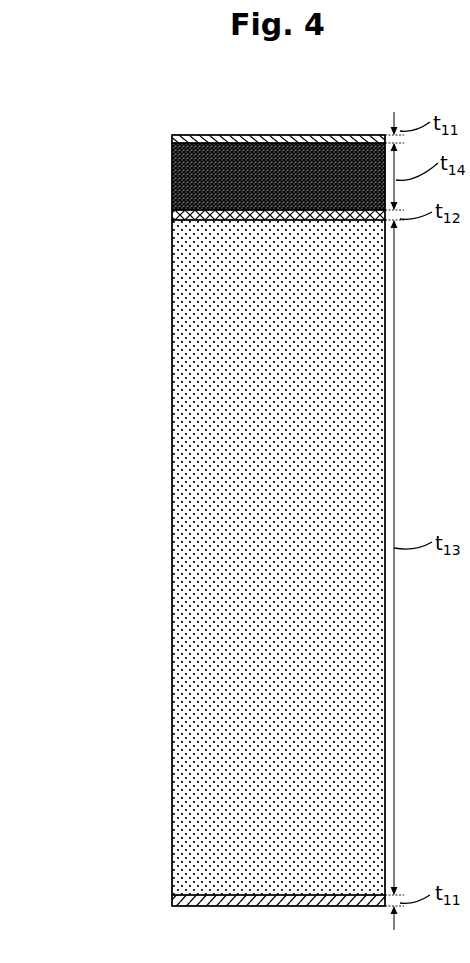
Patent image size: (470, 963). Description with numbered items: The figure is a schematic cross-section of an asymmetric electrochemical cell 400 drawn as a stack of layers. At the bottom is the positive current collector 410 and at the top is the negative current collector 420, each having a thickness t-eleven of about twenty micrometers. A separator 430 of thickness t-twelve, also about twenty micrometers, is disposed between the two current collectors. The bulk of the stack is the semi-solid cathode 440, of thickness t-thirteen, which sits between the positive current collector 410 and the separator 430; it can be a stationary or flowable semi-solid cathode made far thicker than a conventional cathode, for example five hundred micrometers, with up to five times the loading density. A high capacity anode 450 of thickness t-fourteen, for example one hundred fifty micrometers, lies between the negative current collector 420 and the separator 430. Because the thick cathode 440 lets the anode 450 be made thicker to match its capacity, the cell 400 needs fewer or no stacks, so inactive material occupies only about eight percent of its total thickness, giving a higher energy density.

The electrochemical cell 400 is at (134, 107).
The positive current collector 410 is at (173, 900).
The negative current collector 420 is at (222, 134).
The separator 430 is at (172, 214).
The semi-solid cathode 440 is at (172, 320).
The high capacity anode 450 is at (172, 175).